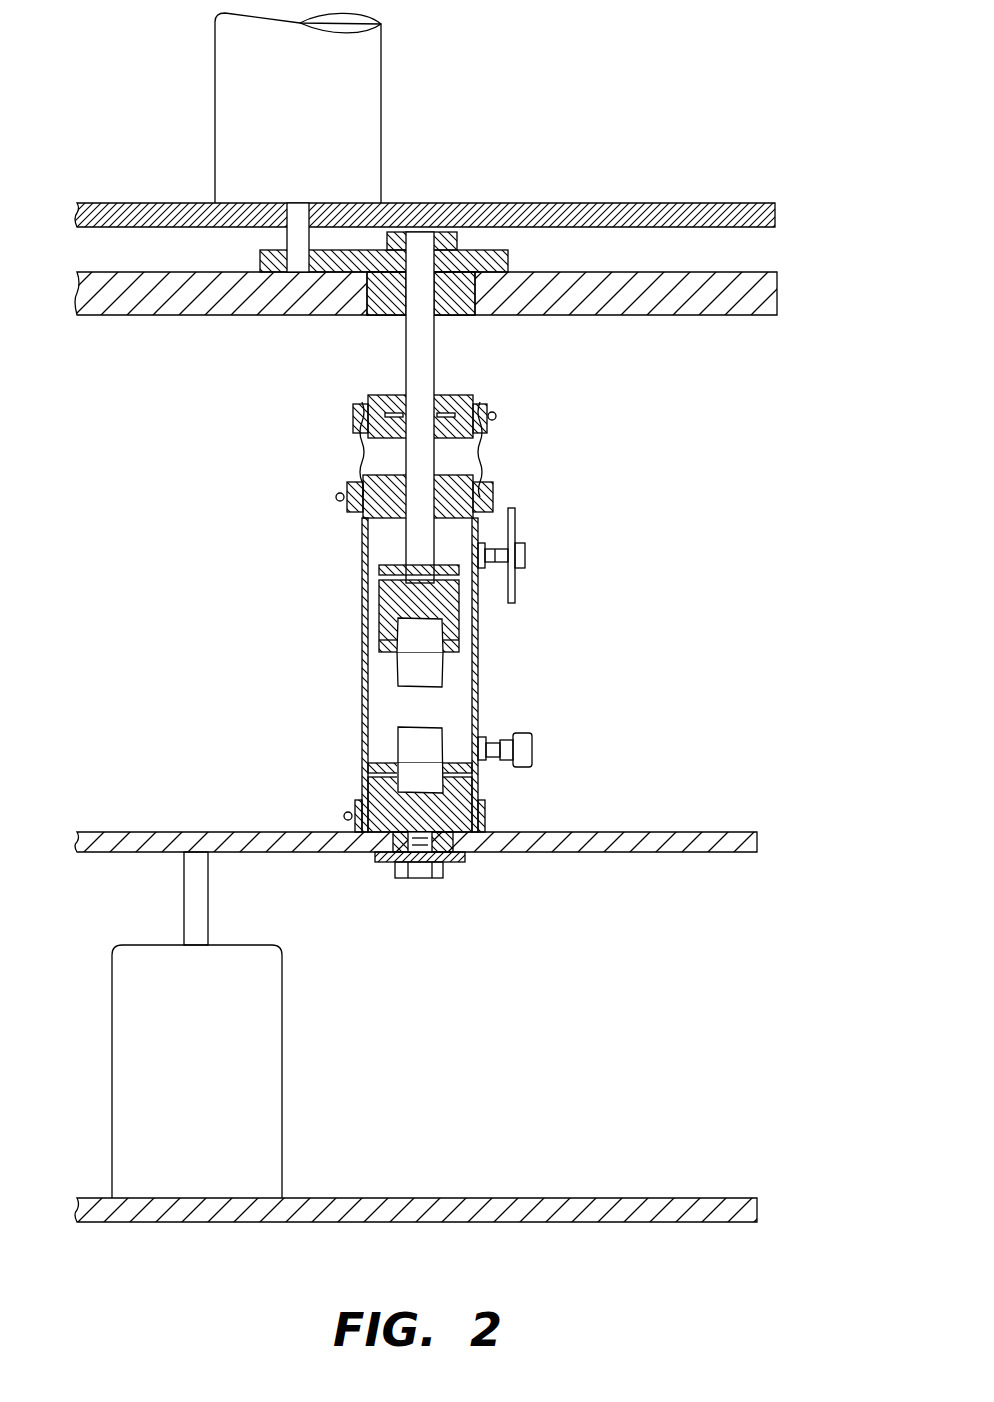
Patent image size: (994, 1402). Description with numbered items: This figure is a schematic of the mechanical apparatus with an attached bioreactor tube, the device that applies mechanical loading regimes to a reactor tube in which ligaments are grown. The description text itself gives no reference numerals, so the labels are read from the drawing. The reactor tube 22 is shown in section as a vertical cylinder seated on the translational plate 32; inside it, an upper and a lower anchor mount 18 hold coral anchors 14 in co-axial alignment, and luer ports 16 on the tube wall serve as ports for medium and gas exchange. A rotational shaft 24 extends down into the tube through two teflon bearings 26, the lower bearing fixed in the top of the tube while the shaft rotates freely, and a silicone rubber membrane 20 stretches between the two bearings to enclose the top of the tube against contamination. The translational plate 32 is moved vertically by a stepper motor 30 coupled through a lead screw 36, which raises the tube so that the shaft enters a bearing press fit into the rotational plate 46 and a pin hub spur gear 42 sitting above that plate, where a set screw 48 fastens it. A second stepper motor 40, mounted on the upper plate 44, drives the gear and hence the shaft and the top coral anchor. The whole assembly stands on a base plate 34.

The sample 14 is at (418, 663).
The valve 16 is at (525, 553).
The piston 18 is at (388, 606).
The bellows 20 is at (357, 463).
The cylindrical body 22 is at (362, 683).
The rod 24 is at (453, 310).
The flange 26 is at (496, 426).
The actuator cylinder 30 is at (147, 1067).
The mounting plate 32 is at (745, 845).
The base plate 34 is at (745, 1212).
The actuator rod 36 is at (194, 897).
The cylinder 40 is at (355, 94).
The block 42 is at (343, 255).
The upper plate 44 is at (765, 216).
The plate 46 is at (762, 300).
The bolt 48 is at (298, 237).